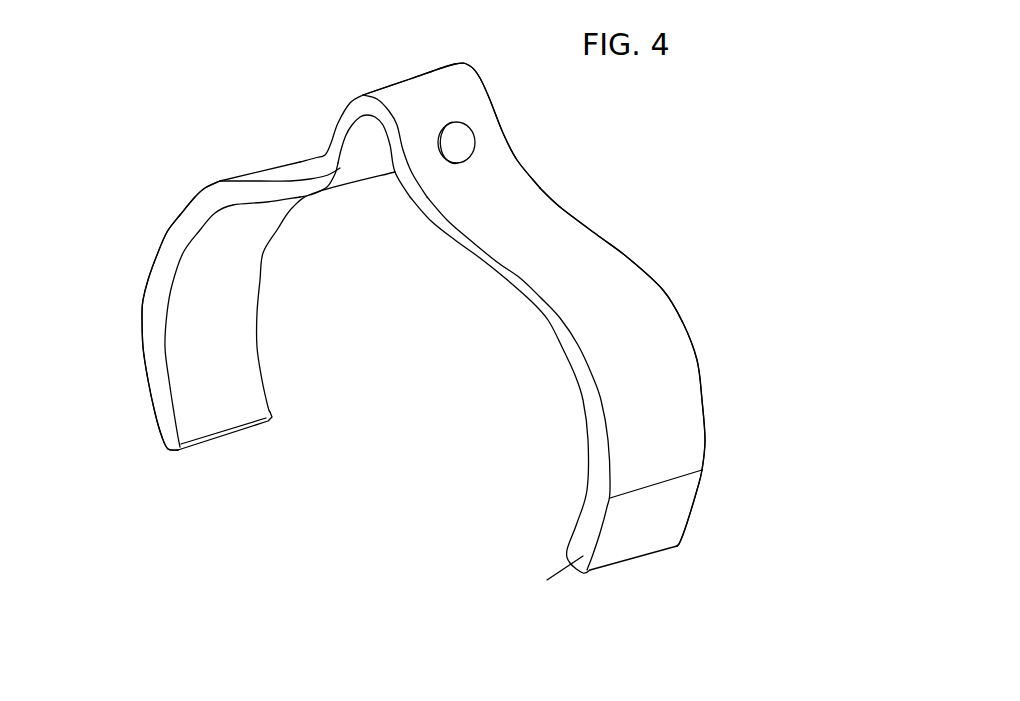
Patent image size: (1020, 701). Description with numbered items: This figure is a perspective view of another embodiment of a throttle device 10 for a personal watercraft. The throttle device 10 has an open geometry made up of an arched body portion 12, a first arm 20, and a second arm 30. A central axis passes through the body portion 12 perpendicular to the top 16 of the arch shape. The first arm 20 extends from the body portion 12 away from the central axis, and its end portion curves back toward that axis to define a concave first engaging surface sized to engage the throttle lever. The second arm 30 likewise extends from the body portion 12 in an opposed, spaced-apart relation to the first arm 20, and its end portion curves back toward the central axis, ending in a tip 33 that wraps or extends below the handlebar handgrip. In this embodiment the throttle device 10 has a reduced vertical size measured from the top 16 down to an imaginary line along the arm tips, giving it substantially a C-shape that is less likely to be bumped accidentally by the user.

The throttle device 10 is at (140, 118).
The body portion 12 is at (482, 117).
The top 16 is at (420, 82).
The first arm 20 is at (637, 330).
The second arm 30 is at (155, 282).
The tip 33 is at (218, 437).